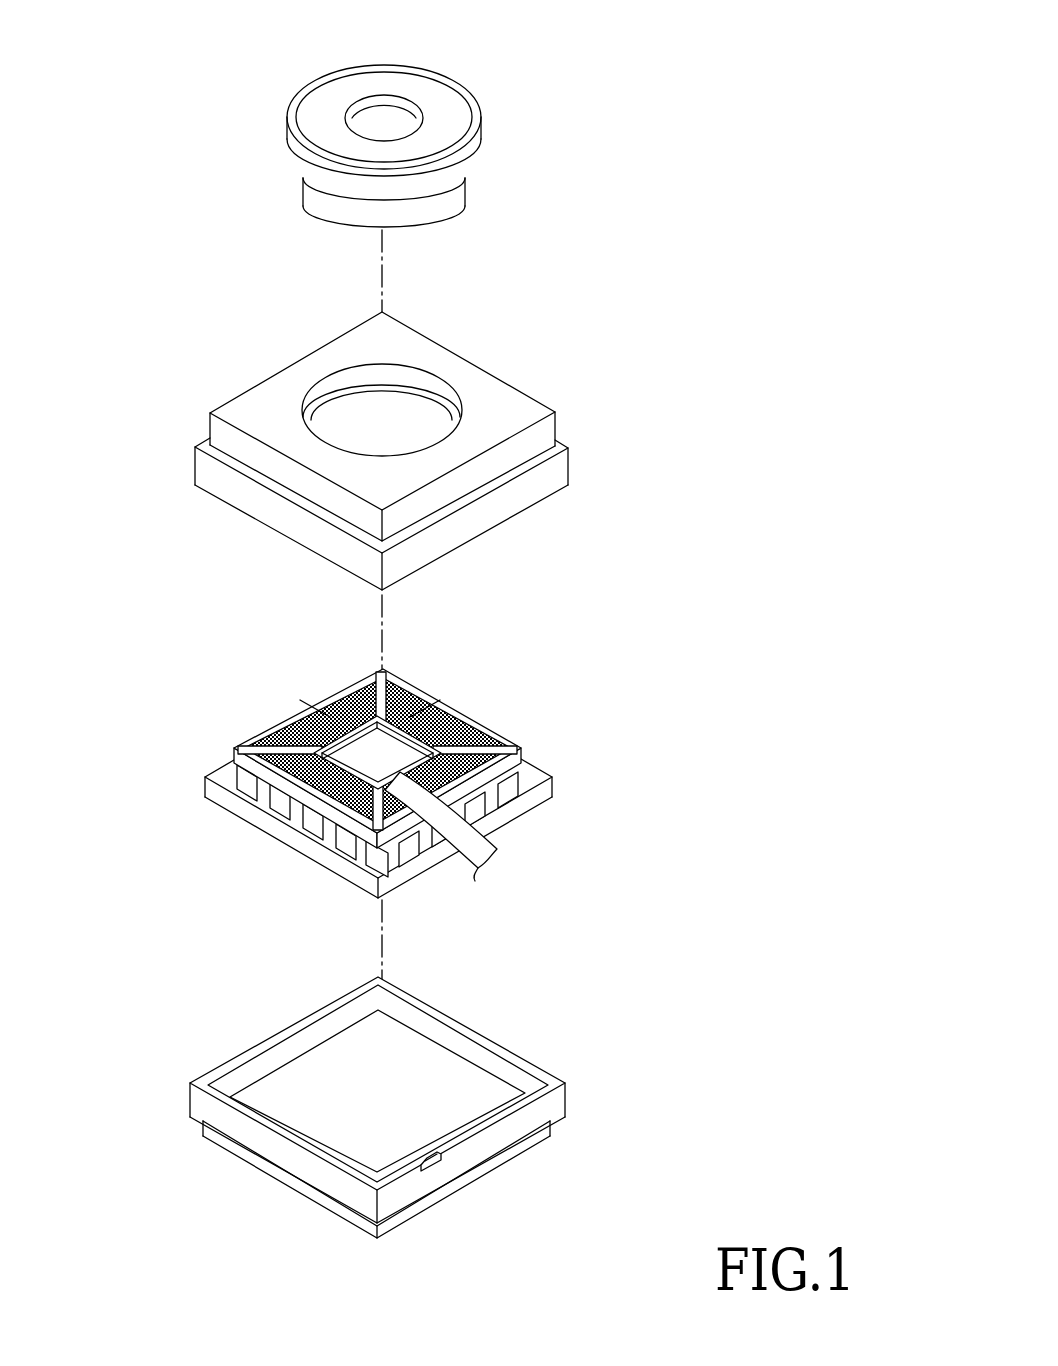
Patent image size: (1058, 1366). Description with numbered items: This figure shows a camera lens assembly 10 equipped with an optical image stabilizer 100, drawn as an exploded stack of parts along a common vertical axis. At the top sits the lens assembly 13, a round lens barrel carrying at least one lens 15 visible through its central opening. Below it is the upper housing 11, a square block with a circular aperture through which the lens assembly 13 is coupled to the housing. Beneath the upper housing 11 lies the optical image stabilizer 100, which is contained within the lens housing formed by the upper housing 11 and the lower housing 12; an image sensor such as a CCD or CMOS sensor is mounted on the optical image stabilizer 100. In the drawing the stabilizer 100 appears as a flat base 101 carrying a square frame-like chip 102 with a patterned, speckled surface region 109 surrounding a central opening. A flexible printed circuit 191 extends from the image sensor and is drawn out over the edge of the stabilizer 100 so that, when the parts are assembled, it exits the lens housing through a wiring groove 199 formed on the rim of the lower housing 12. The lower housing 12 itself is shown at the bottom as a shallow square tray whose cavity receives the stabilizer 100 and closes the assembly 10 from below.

The camera lens assembly 10 is at (688, 68).
The upper housing 11 is at (409, 451).
The lower housing 12 is at (404, 1114).
The lens assembly 13 is at (428, 113).
The lens 15 is at (399, 110).
The optical image stabilizer 100 is at (371, 805).
The substrate 101 is at (205, 790).
The actuator chip 102 is at (467, 790).
The electrode pattern 109 is at (283, 728).
The flexible printed circuit 191 is at (453, 842).
The wiring groove 199 is at (442, 1158).